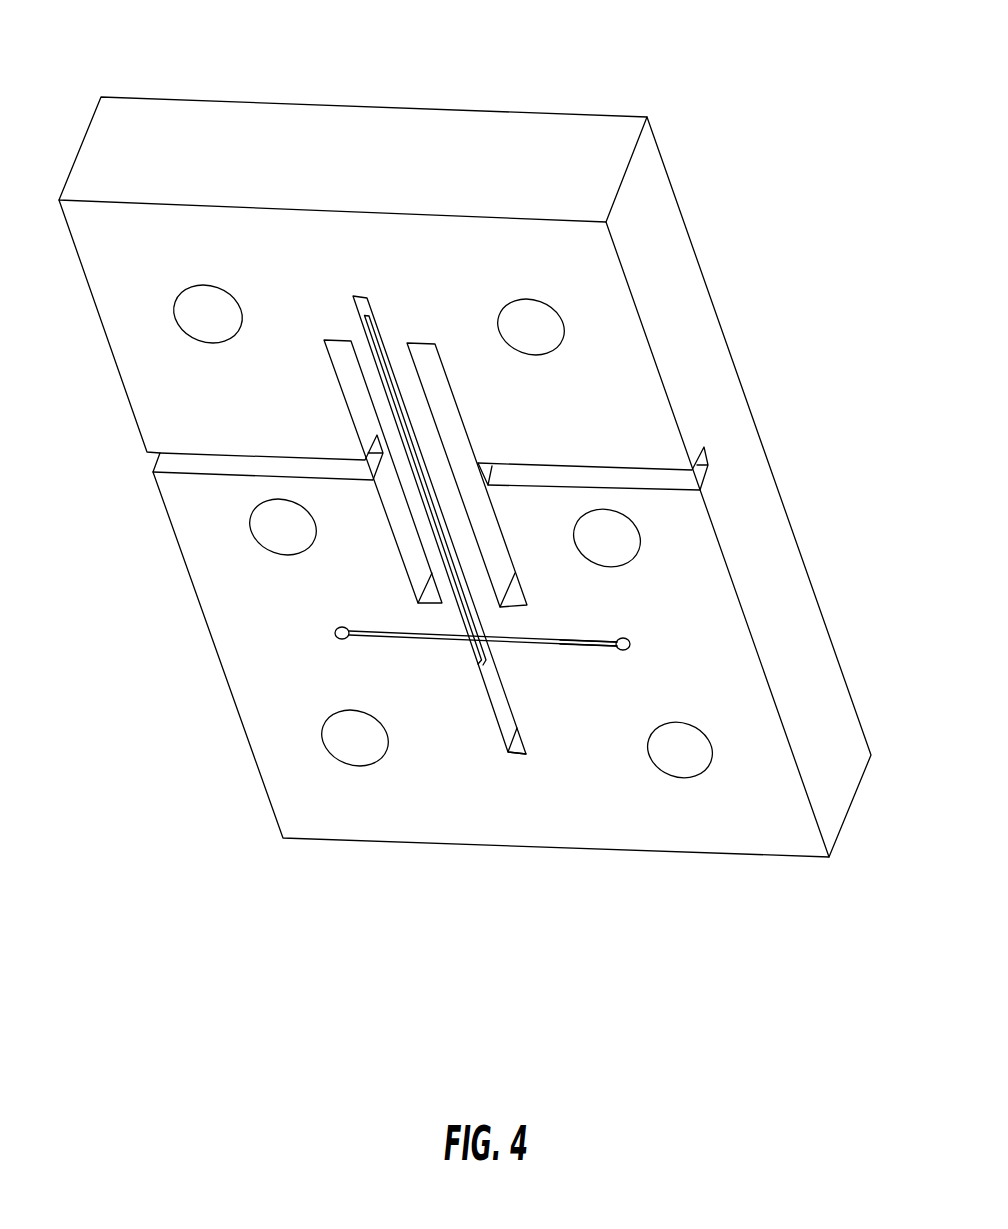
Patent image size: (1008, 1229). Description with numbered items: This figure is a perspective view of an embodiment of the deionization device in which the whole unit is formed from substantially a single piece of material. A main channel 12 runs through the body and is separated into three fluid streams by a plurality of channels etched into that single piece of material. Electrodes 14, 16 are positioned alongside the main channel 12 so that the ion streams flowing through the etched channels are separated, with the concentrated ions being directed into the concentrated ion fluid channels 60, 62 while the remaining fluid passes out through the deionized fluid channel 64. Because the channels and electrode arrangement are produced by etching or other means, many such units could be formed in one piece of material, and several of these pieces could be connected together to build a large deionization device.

The main channel 12 is at (365, 297).
The electrode 14 is at (420, 357).
The electrode 16 is at (342, 338).
The concentrated ion fluid channel 60 is at (425, 637).
The concentrated ion fluid channel 62 is at (599, 647).
The deionized fluid channel 64 is at (513, 733).